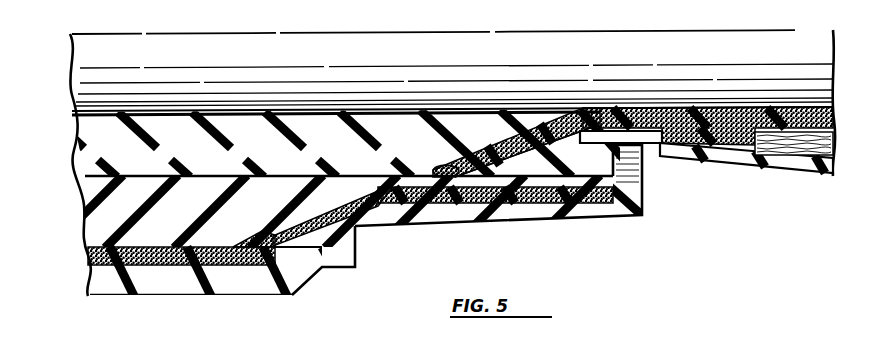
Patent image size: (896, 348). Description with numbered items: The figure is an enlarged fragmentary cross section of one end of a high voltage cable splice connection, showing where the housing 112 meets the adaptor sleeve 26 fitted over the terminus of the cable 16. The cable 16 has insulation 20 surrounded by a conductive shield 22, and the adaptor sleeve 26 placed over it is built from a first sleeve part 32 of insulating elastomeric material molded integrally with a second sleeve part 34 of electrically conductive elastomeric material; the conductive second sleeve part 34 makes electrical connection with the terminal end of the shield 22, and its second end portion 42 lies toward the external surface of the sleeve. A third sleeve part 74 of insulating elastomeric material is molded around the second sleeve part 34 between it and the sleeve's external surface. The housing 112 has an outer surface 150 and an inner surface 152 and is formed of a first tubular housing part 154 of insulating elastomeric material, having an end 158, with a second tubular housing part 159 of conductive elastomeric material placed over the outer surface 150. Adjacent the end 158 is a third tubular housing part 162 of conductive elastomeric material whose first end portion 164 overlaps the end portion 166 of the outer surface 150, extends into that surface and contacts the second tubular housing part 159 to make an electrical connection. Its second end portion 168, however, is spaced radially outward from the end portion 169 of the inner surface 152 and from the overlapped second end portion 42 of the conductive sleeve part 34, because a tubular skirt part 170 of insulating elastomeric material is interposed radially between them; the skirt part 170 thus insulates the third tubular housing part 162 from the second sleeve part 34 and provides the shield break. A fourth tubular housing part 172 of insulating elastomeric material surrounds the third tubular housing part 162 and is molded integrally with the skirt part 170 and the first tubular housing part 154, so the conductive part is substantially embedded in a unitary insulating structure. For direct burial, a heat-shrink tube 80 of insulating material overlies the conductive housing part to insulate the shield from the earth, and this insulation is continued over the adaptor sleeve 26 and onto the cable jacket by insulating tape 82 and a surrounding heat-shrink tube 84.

The high voltage cable 16 is at (70, 50).
The insulation 20 is at (834, 66).
The conductive shield 22 is at (822, 126).
The adaptor sleeve 26 is at (78, 150).
The first sleeve part 32 is at (108, 128).
The second sleeve part 34 is at (513, 140).
The second end portion 42 is at (437, 166).
The third sleeve part 74 is at (656, 132).
The heat-shrink tube 80 is at (110, 290).
The insulating tape 82 is at (815, 153).
The heat-shrink tube 84 is at (714, 164).
The housing 112 is at (96, 220).
The outer surface 150 is at (90, 267).
The inner surface 152 is at (122, 178).
The first tubular housing part 154 is at (185, 192).
The end 158 is at (356, 238).
The second tubular housing part 159 is at (175, 283).
The third tubular housing part 162 is at (305, 215).
The first end portion 164 is at (243, 246).
The end portion 166 is at (250, 265).
The second end portion 168 is at (505, 191).
The end portion 169 is at (483, 168).
The tubular skirt part 170 is at (448, 178).
The fourth tubular housing part 172 is at (610, 200).